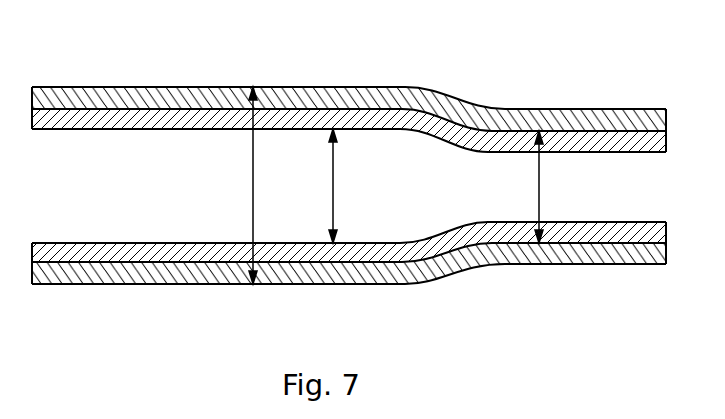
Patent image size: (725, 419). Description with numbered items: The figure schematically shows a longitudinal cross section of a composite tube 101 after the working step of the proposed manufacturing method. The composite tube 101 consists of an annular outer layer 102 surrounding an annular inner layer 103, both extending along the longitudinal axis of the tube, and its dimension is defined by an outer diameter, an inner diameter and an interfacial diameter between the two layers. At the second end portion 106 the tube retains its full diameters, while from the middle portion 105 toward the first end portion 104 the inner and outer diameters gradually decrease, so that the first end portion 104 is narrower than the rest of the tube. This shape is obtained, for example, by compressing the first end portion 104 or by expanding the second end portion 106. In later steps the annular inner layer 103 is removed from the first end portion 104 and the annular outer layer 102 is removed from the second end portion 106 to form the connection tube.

The composite tube 101 is at (358, 181).
The annular outer layer 102 is at (72, 272).
The annular inner layer 103 is at (603, 233).
The first end portion 104 is at (640, 120).
The middle portion 105 is at (375, 90).
The second end portion 106 is at (45, 92).